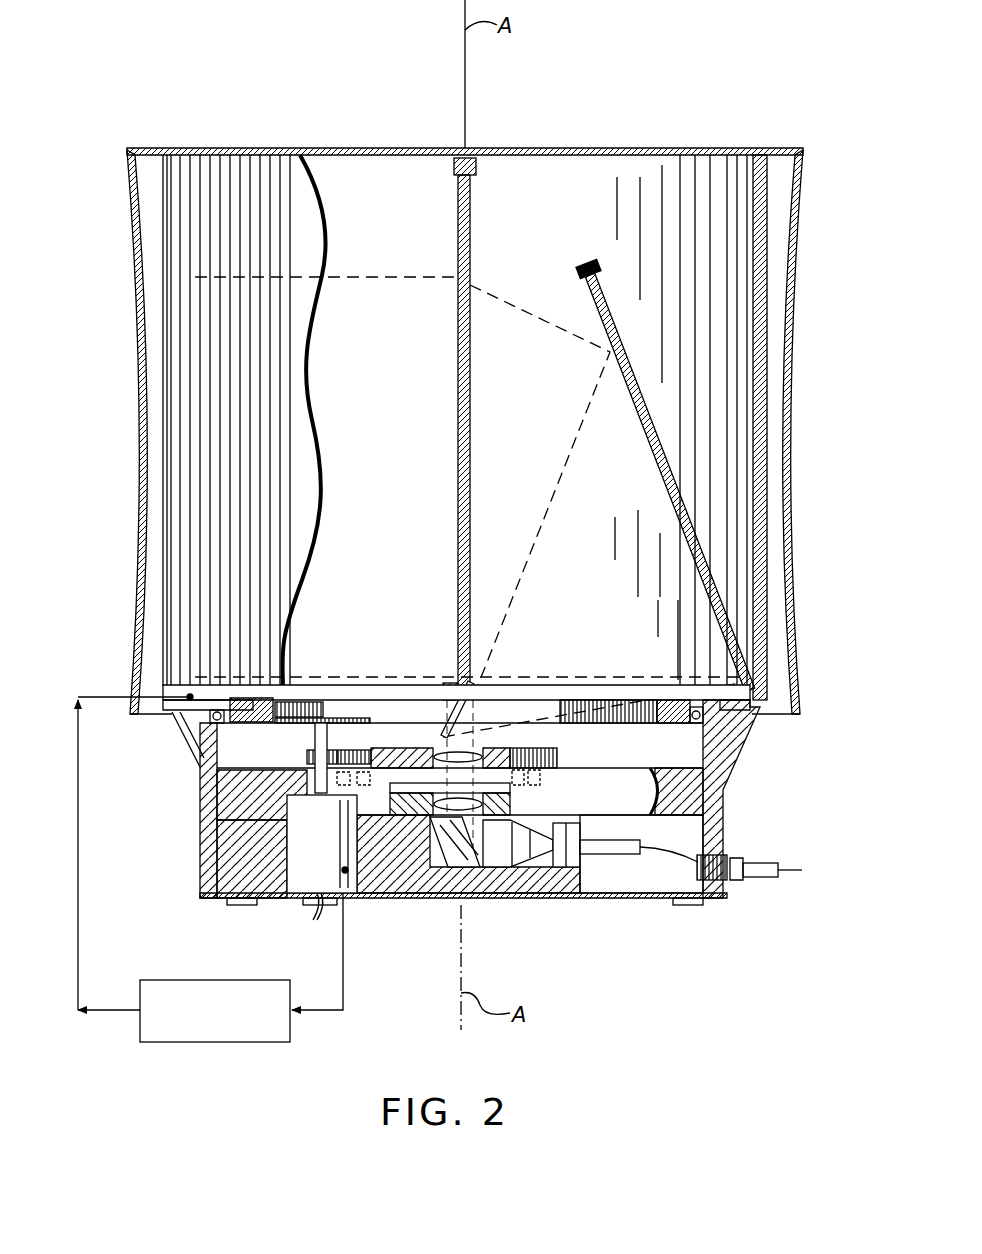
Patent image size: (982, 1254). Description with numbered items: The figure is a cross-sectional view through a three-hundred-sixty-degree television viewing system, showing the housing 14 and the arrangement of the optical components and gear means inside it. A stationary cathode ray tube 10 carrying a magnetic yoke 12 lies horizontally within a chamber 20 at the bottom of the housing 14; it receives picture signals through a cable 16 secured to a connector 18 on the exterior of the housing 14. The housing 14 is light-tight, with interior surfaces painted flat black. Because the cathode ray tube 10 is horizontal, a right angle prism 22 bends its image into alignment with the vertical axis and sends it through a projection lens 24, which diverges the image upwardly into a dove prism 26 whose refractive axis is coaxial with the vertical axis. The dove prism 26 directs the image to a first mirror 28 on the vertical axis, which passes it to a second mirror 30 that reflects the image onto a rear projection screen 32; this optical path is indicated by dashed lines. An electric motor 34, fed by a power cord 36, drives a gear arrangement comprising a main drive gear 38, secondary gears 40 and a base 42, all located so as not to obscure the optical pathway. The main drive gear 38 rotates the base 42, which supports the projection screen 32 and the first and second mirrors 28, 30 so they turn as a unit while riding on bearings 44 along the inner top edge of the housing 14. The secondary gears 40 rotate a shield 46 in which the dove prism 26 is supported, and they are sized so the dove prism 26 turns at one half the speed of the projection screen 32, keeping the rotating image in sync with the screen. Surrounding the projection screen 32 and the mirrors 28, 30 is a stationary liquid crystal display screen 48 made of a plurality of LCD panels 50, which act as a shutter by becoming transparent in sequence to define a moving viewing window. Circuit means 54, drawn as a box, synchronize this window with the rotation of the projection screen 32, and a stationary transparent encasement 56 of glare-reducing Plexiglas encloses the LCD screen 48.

The cathode ray tube 10 is at (553, 898).
The magnetic yoke 12 is at (575, 834).
The housing 14 is at (725, 790).
The cable 16 is at (767, 862).
The connector 18 is at (730, 883).
The chamber 20 is at (653, 898).
The right angle prism 22 is at (443, 870).
The projection lens 24 is at (507, 870).
The dove prism 26 is at (495, 735).
The first mirror 28 is at (423, 733).
The second mirror 30 is at (683, 545).
The rear projection screen 32 is at (458, 405).
The electric motor 34 is at (300, 853).
The power cord 36 is at (307, 920).
The main drive gear 38 is at (330, 702).
The secondary gears 40 is at (357, 750).
The base 42 is at (380, 707).
The bearings 44 is at (217, 773).
The shield 46 is at (507, 773).
The liquid crystal display screen 48 is at (160, 207).
The LCD panels 50 is at (273, 157).
The circuit means 54 is at (193, 1043).
The transparent encasement 56 is at (877, 163).